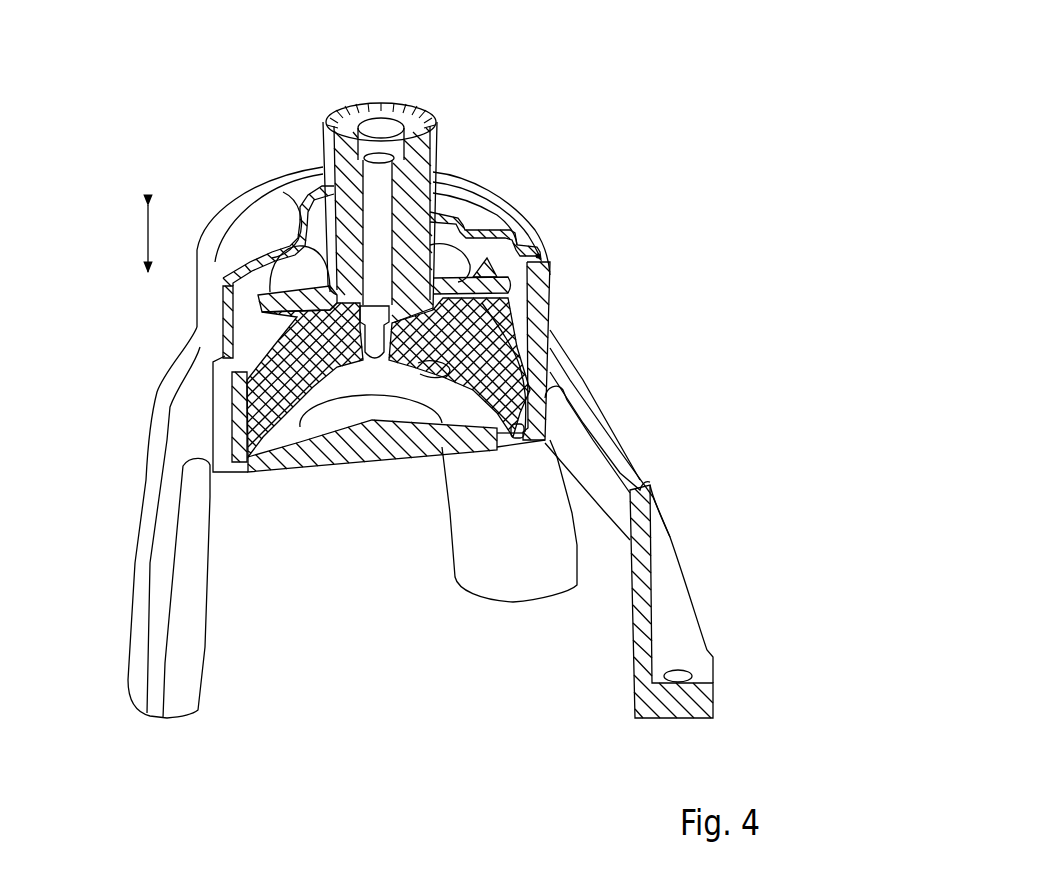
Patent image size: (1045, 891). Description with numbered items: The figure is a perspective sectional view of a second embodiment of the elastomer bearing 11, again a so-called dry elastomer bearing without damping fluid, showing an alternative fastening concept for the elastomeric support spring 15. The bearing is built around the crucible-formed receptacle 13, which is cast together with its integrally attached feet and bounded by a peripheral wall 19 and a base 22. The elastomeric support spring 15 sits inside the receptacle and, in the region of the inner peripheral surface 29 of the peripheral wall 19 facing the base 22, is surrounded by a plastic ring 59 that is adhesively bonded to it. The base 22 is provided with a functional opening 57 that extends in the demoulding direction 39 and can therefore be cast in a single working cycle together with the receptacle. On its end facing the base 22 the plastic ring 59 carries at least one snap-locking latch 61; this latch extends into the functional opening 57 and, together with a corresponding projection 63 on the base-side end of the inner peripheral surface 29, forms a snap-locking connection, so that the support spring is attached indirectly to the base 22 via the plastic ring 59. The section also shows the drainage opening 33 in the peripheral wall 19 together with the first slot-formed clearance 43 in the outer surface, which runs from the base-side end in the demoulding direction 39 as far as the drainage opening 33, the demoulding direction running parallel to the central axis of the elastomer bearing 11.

The elastomer bearing 11 is at (506, 163).
The crucible-formed receptacle 13 is at (557, 298).
The elastomeric support spring 15 is at (488, 353).
The peripheral wall 19 is at (548, 268).
The base 22 is at (278, 432).
The inner peripheral surface 29 is at (528, 230).
The drainage opening 33 is at (215, 353).
The demoulding direction 39 is at (148, 240).
The first slot-formed clearance 43 is at (237, 412).
The functional opening 57 is at (511, 452).
The plastic ring 59 is at (468, 390).
The snap-locking latch 61 is at (510, 423).
The projection 63 is at (500, 412).